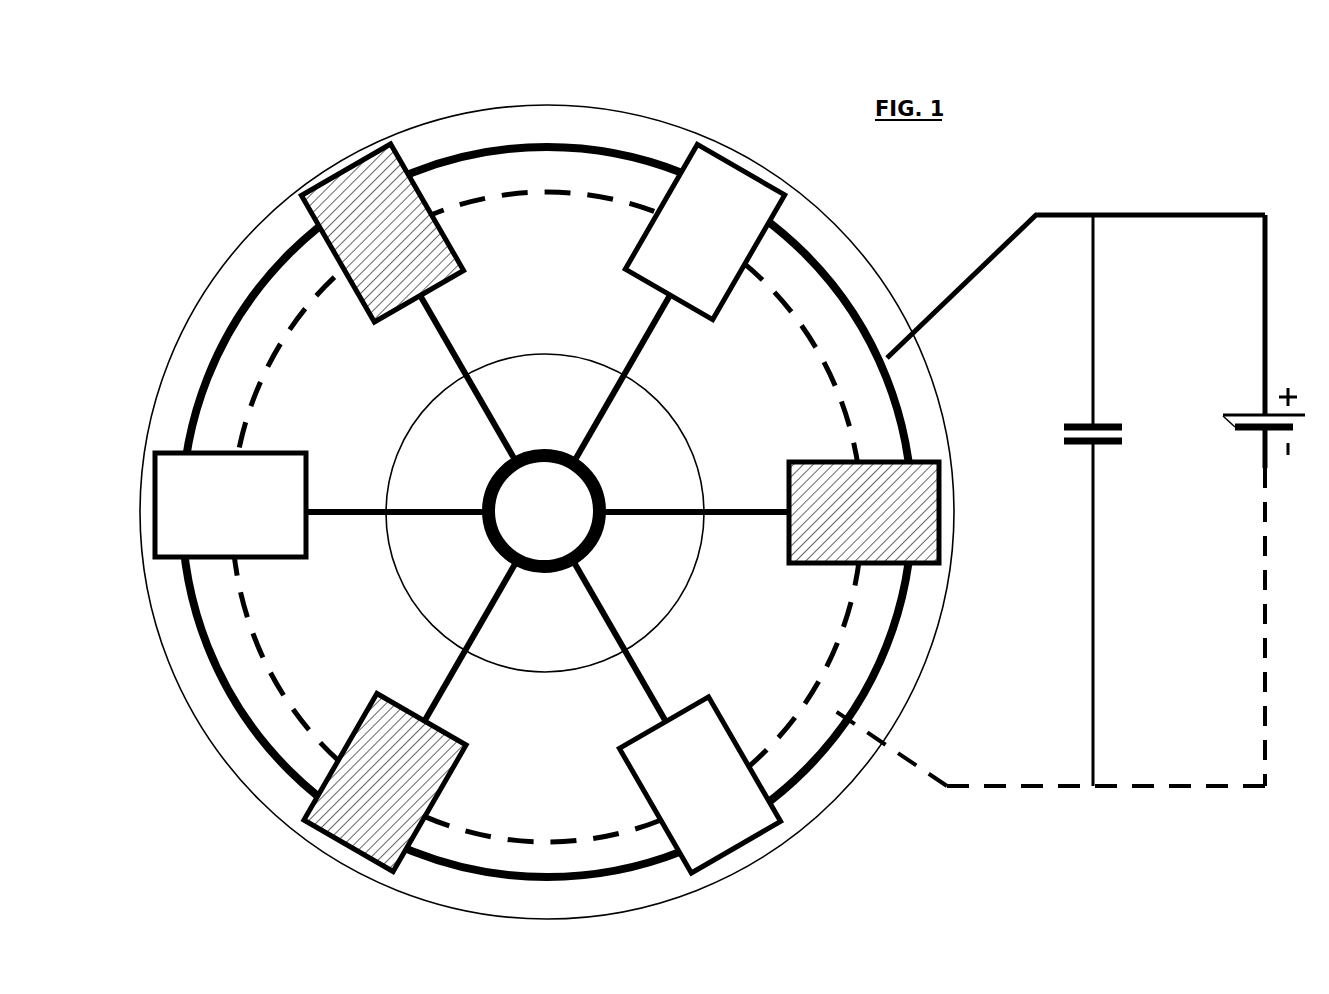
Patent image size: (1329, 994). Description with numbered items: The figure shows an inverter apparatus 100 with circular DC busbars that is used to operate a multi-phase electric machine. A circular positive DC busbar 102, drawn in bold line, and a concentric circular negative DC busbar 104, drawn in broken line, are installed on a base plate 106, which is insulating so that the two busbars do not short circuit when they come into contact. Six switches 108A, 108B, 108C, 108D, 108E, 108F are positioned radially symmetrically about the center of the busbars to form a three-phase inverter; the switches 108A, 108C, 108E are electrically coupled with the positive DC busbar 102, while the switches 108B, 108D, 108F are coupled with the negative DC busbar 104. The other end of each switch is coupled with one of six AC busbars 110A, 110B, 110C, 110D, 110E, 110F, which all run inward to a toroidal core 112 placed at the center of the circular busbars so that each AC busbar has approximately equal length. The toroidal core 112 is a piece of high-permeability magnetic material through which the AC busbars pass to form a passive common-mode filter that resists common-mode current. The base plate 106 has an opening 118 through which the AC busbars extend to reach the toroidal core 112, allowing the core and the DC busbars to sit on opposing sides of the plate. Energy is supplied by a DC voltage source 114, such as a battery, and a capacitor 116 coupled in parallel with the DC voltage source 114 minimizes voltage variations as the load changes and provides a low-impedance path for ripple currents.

The inverter apparatus 100 is at (926, 179).
The circular positive DC busbar 102 is at (589, 143).
The circular negative DC busbar 104 is at (500, 194).
The base plate 106 is at (230, 250).
The switch 108A is at (326, 188).
The switch 108B is at (741, 170).
The switch 108C is at (940, 507).
The switch 108D is at (735, 845).
The switch 108E is at (352, 840).
The switch 108F is at (155, 510).
The AC busbar 110A is at (450, 352).
The AC busbar 110B is at (640, 350).
The AC busbar 110C is at (732, 510).
The AC busbar 110D is at (640, 679).
The AC busbar 110E is at (445, 688).
The AC busbar 110F is at (356, 517).
The toroidal core 112 is at (478, 466).
The DC voltage source 114 is at (1252, 418).
The capacitor 116 is at (1077, 500).
The opening 118 is at (518, 352).